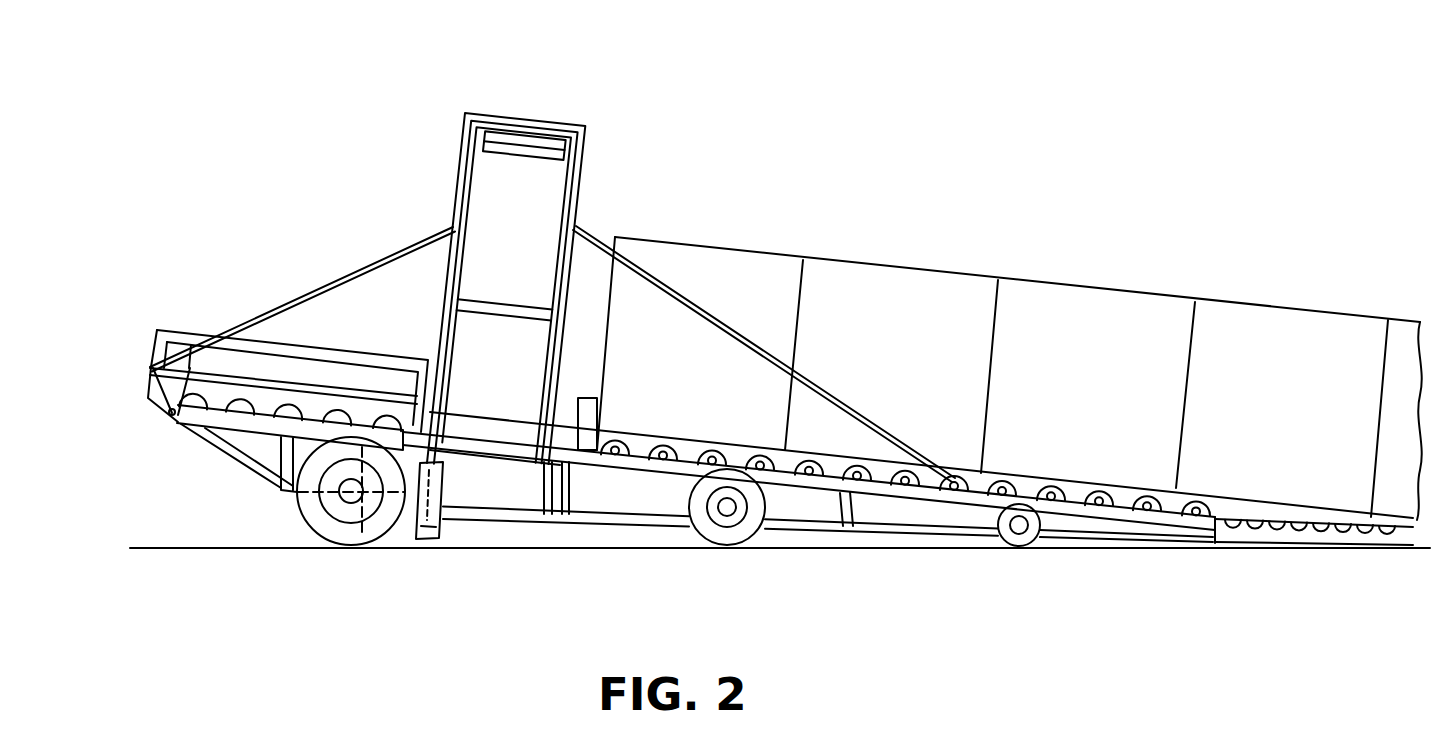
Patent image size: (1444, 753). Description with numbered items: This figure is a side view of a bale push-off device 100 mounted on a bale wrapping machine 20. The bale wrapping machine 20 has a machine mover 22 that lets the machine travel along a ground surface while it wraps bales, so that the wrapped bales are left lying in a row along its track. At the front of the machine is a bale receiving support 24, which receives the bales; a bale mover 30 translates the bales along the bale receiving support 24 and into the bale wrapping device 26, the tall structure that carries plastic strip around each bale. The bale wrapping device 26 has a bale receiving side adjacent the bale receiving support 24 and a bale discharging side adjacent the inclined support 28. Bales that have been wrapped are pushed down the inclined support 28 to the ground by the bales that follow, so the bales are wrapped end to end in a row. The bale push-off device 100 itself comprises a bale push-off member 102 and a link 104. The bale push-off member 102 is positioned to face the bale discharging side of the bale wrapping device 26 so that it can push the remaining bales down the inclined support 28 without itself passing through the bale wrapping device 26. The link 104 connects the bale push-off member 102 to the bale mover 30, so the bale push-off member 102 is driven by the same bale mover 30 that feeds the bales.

The bale wrapping machine 20 is at (658, 106).
The machine mover 22 is at (306, 527).
The bale receiving support 24 is at (147, 392).
The bale wrapping device 26 is at (520, 115).
The inclined support 28 is at (1003, 487).
The bale mover 30 is at (247, 443).
The bale push-off device 100 is at (587, 500).
The bale push-off member 102 is at (590, 398).
The link 104 is at (596, 466).